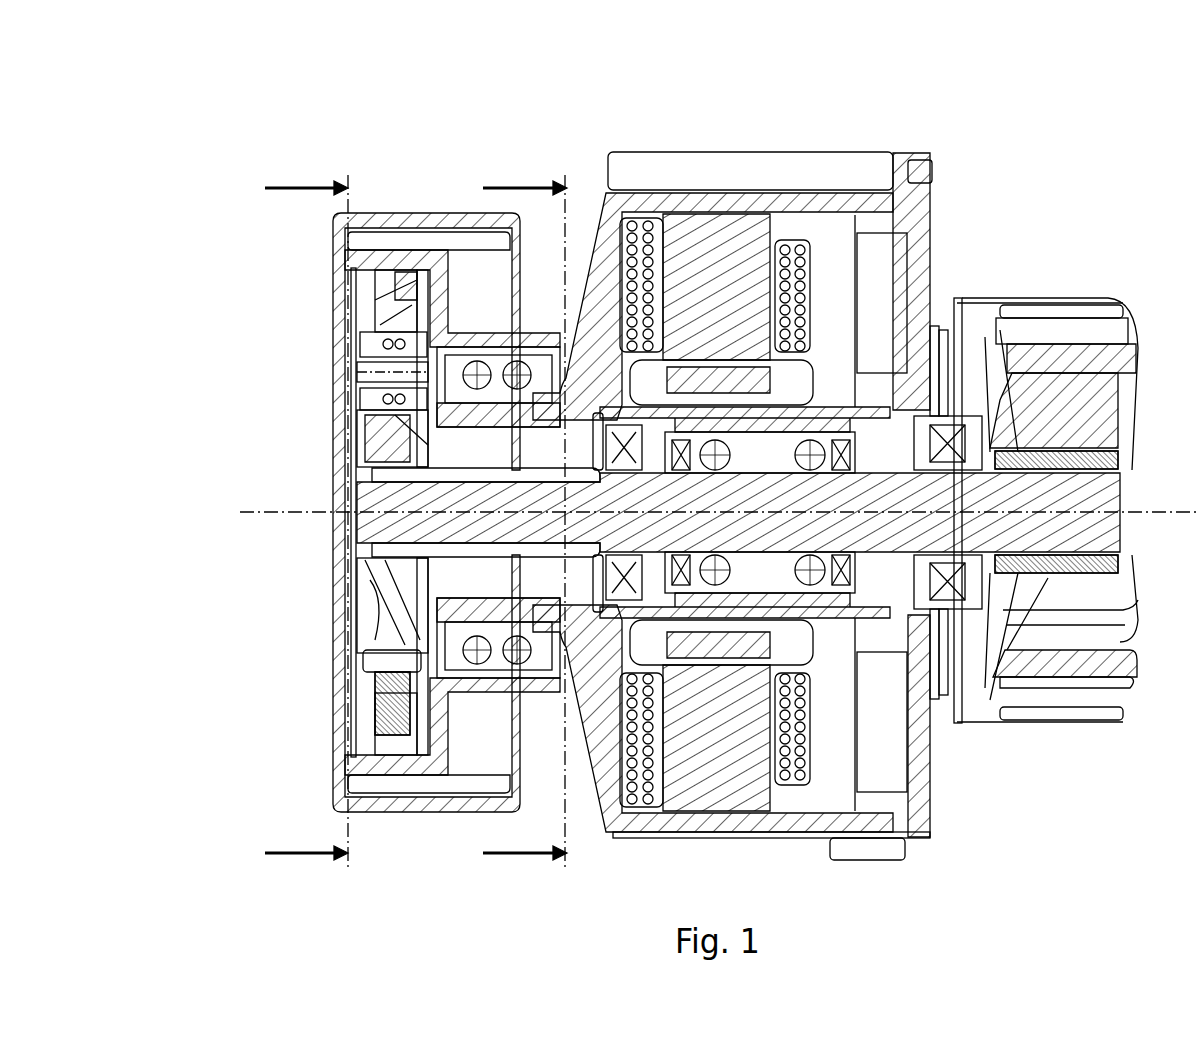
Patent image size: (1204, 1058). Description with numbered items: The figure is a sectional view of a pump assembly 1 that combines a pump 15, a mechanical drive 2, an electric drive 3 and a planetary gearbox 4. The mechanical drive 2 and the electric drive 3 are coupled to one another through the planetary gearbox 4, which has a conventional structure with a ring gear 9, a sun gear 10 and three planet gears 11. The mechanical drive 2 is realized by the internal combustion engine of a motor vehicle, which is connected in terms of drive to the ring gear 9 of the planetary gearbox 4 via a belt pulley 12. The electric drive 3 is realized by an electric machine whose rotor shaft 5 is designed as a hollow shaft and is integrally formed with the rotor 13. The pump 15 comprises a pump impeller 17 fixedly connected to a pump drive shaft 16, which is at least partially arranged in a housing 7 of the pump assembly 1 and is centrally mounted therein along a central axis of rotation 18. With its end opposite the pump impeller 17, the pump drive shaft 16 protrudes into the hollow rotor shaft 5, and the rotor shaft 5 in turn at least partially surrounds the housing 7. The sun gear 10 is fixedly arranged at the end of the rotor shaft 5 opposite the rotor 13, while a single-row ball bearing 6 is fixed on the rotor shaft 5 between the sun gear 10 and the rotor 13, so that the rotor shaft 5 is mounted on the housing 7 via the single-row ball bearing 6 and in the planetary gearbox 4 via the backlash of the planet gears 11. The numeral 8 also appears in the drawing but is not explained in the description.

The pump assembly 1 is at (215, 140).
The mechanical drive 2 is at (423, 290).
The electric drive 3 is at (745, 660).
The planetary gearbox 4 is at (320, 365).
The rotor shaft 5 is at (517, 560).
The single-row ball bearing 6 is at (640, 600).
The housing 7 is at (698, 590).
The clutch lever 8 is at (385, 430).
The ring gear 9 is at (390, 290).
The sun gear 10 is at (392, 530).
The planet gears 11 is at (395, 465).
The belt pulley 12 is at (440, 425).
The rotor 13 is at (908, 840).
The pump 15 is at (1053, 743).
The pump drive shaft 16 is at (1128, 627).
The pump impeller 17 is at (985, 340).
The central axis of rotation 18 is at (965, 495).